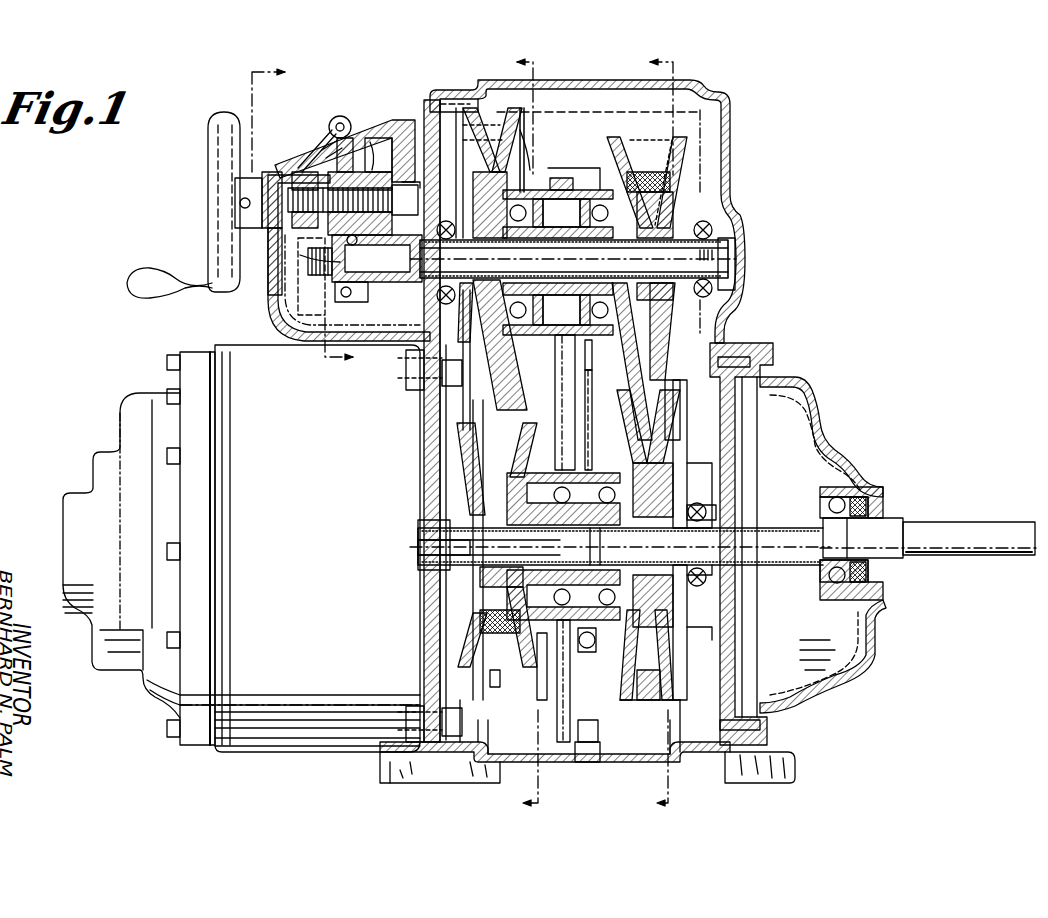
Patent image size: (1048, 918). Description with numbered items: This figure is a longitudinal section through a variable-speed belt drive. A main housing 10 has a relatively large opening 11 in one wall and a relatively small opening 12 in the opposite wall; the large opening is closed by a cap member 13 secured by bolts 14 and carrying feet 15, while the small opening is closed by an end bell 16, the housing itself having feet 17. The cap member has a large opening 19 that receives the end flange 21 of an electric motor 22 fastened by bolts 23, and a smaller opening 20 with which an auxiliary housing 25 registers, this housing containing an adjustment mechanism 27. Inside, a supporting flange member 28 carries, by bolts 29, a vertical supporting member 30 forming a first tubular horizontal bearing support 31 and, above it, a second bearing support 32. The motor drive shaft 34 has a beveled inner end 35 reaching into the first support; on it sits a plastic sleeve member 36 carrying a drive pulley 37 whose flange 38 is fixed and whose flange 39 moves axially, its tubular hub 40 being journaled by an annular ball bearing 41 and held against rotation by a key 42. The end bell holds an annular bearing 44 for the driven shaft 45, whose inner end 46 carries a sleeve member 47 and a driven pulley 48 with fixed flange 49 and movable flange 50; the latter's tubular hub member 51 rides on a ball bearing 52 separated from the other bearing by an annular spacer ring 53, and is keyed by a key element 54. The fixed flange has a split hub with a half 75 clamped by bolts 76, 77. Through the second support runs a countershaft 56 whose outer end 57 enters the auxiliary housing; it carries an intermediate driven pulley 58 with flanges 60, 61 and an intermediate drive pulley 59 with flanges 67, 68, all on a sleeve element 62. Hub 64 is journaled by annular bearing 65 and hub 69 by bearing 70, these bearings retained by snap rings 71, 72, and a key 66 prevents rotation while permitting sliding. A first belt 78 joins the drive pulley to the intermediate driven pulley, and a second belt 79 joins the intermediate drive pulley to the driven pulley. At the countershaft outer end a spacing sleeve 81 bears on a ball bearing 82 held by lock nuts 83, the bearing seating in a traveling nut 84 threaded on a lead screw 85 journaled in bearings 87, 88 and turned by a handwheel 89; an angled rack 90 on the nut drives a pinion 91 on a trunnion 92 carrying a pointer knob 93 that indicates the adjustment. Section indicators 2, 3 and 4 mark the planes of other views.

The section line 2- 2 is at (649, 432).
The section line 3- 3 is at (514, 432).
The section line 4- 4 is at (310, 214).
The main housing 10 is at (733, 142).
The relatively large opening 11 is at (452, 94).
The relatively small opening 12 is at (770, 378).
The cap member 13 is at (470, 88).
The bolts 14 is at (490, 682).
The feet 15 is at (380, 776).
The end bell 16 is at (826, 412).
The feet 17 is at (775, 758).
The large opening 19 is at (412, 366).
The relatively smaller opening 20 is at (428, 318).
The end flange 21 is at (430, 432).
The electric motor 22 is at (312, 716).
The bolts 23 is at (422, 384).
The auxiliary housing 25 is at (290, 318).
The adjustment mechanism 27 is at (372, 138).
The supporting flange member 28 is at (578, 752).
The bolts 29 is at (585, 440).
The vertical supporting member 30 is at (572, 688).
The first tubular horizontal bearing support 31 is at (590, 480).
The second tubular horizontal bearing support 32 is at (574, 186).
The drive shaft 34 is at (438, 540).
The inner end 35 is at (515, 512).
The sleeve member 36 is at (434, 533).
The drive pulley 37 is at (450, 462).
The pulley flange 38 is at (472, 636).
The pulley flange 39 is at (462, 655).
The tubular hub 40 is at (522, 476).
The annular ball bearing 41 is at (520, 450).
The key 42 is at (436, 548).
The annular bearing 44 is at (842, 502).
The driven shaft 45 is at (880, 535).
The inner end 46 is at (596, 622).
The sleeve member 47 is at (716, 594).
The driven pulley 48 is at (676, 655).
The pulley flange 49 is at (670, 440).
The pulley flange 50 is at (665, 420).
The tubular hub member 51 is at (672, 493).
The annular ball bearing 52 is at (680, 590).
The annular spacer ring 53 is at (562, 650).
The key element 54 is at (742, 538).
The countershaft 56 is at (738, 246).
The outer end 57 is at (300, 255).
The intermediate driven pulley 58 is at (520, 128).
The intermediate drive pulley 59 is at (660, 150).
The pulley flange 60 is at (472, 160).
The pulley flange 61 is at (518, 160).
The sleeve element 62 is at (466, 228).
The hub 64 is at (561, 213).
The annular bearing 65 is at (530, 198).
The key 66 is at (716, 262).
The pulley flange 67 is at (620, 165).
The pulley flange 68 is at (690, 183).
The hub 69 is at (678, 215).
The annular bearing 70 is at (577, 399).
The snap ring 71 is at (558, 309).
The snap ring 72 is at (566, 310).
The half 75 is at (702, 505).
The bolt 76 is at (708, 512).
The bolt 77 is at (715, 580).
The first belt 78 is at (496, 388).
The second belt 79 is at (708, 345).
The spacing sleeve 81 is at (406, 290).
The annular ball bearing 82 is at (351, 304).
The lock nuts 83 is at (315, 276).
The traveling nut 84 is at (330, 218).
The lead screw 85 is at (236, 222).
The bearing 87 is at (410, 120).
The bearing 88 is at (270, 168).
The handwheel 89 is at (214, 132).
The angled rack 90 is at (341, 116).
The pinion 91 is at (316, 160).
The trunnion 92 is at (344, 124).
The pointer knob 93 is at (330, 150).